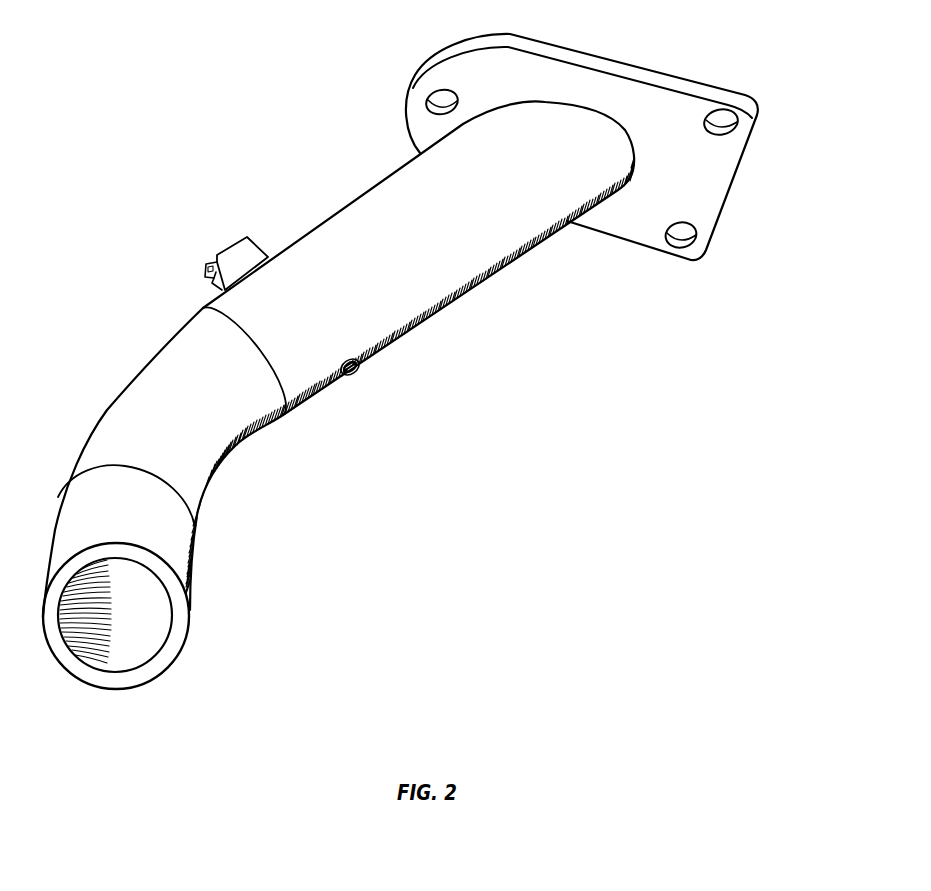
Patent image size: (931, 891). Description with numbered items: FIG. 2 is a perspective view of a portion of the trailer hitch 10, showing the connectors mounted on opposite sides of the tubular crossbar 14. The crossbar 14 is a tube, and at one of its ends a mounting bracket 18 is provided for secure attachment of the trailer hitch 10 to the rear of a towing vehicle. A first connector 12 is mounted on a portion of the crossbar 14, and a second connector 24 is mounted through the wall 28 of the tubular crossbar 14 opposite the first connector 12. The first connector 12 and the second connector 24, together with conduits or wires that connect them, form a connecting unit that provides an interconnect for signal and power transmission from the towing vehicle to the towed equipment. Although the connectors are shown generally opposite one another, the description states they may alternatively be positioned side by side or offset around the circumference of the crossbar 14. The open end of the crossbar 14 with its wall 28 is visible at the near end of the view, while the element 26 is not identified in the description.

The trailer hitch 10 is at (243, 96).
The first connector 12 is at (242, 258).
The crossbar 14 is at (415, 180).
The mounting bracket 18 is at (707, 185).
The second connector 24 is at (357, 377).
The inner passage (bore) 26 is at (127, 637).
The wall 28 is at (160, 660).